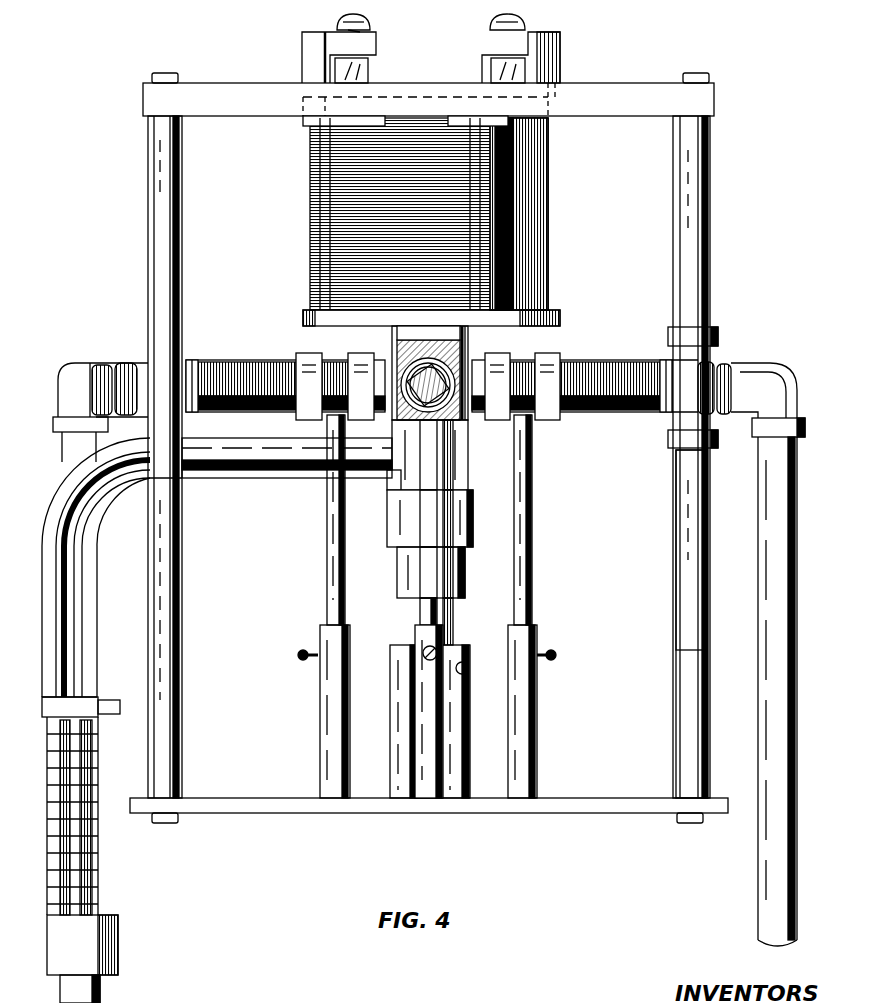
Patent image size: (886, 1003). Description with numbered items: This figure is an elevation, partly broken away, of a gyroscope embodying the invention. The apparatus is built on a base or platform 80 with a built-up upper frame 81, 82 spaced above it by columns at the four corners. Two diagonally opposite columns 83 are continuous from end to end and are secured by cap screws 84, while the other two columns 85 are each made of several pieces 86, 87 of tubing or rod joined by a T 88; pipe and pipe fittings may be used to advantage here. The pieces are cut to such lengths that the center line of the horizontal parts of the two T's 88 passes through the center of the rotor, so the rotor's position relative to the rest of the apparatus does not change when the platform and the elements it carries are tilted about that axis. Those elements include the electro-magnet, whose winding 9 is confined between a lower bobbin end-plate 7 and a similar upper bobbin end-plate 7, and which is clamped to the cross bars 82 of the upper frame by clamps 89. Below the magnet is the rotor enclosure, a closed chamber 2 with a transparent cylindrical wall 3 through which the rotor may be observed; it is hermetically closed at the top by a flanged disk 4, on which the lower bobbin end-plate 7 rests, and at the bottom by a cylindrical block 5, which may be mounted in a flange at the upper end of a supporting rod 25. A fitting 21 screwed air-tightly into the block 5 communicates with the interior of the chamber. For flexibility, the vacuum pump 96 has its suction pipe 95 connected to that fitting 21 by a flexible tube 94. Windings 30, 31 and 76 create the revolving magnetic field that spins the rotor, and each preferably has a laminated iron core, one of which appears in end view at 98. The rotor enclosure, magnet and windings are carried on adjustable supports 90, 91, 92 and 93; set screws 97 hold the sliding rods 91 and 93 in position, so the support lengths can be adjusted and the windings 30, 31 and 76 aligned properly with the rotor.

The closed chamber 2 is at (473, 354).
The transparent cylindrical wall 3 is at (466, 395).
The flanged disk 4 is at (405, 331).
The cylindrical block 5 is at (448, 460).
The bobbin end-plate 7 is at (548, 92).
The winding 9 is at (540, 213).
The fitting 21 is at (390, 489).
The supporting rod 25 is at (455, 522).
The winding 30 is at (205, 370).
The winding 31 is at (640, 375).
The winding 76 is at (428, 408).
The base 80 is at (536, 808).
The upper frame 81 is at (222, 97).
The cross bars 82 is at (355, 73).
The columns 83 is at (180, 612).
The cap screws 84 is at (163, 73).
The columns 85 is at (661, 566).
The piece of tubing or rod 86 is at (706, 172).
The piece of tubing or rod 87 is at (704, 590).
The T 88 is at (700, 337).
The clamps 89 is at (314, 50).
The adjustable support 90 is at (332, 730).
The sliding rod 91 is at (333, 598).
The adjustable support 92 is at (412, 708).
The sliding rod 93 is at (447, 621).
The flexible tube 94 is at (268, 470).
The suction pipe 95 is at (62, 600).
The vacuum pump 96 is at (95, 783).
The set screws 97 is at (300, 657).
The laminated iron core 98 is at (420, 393).